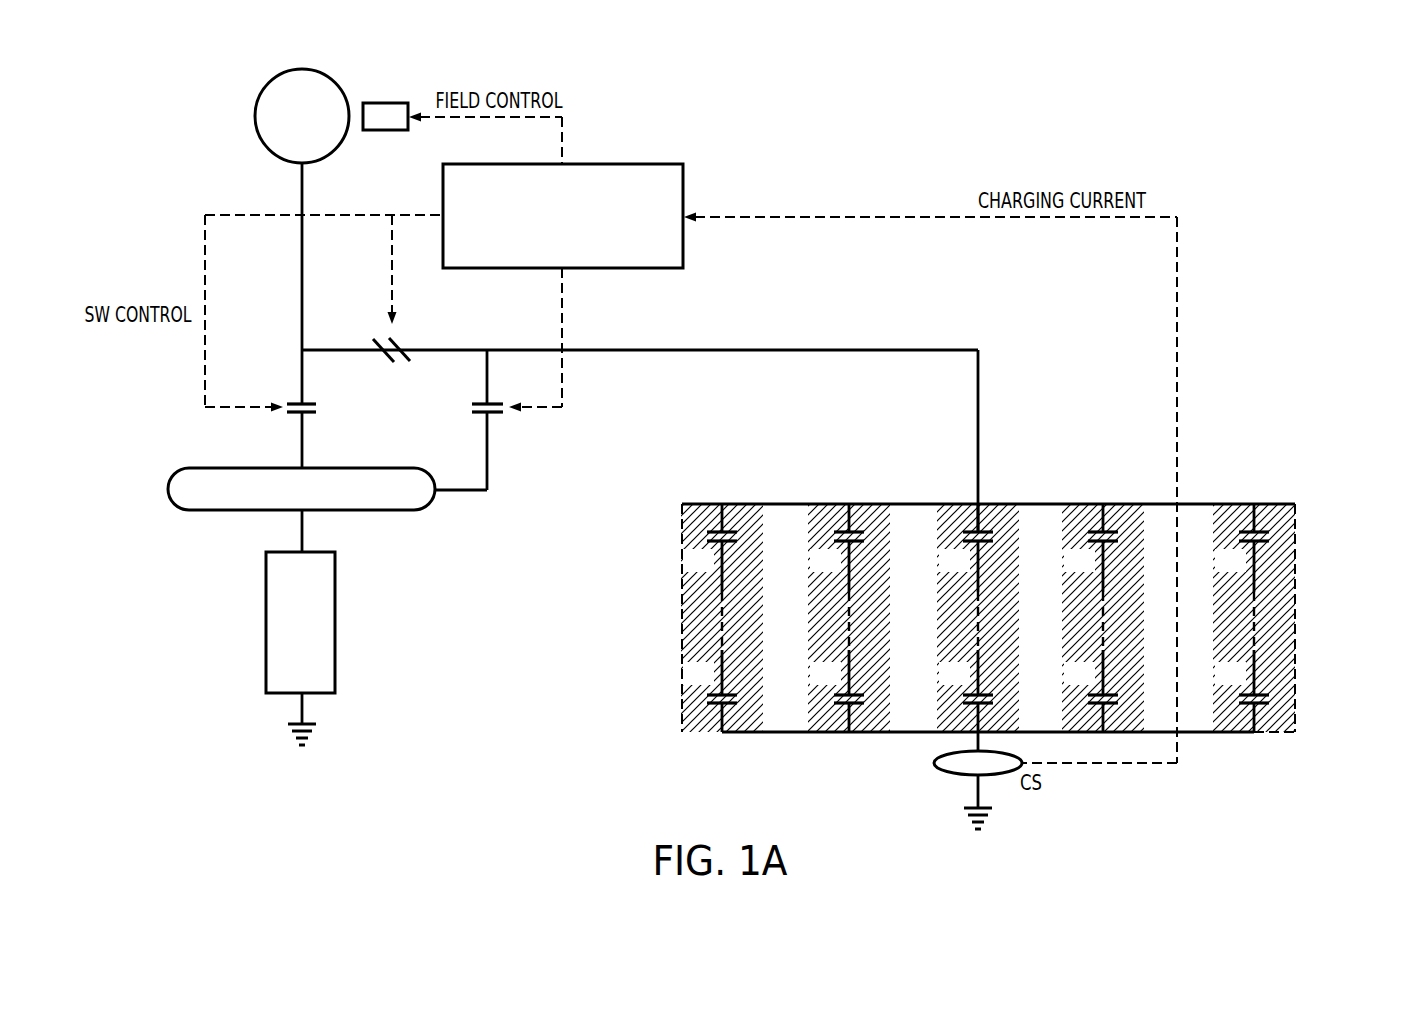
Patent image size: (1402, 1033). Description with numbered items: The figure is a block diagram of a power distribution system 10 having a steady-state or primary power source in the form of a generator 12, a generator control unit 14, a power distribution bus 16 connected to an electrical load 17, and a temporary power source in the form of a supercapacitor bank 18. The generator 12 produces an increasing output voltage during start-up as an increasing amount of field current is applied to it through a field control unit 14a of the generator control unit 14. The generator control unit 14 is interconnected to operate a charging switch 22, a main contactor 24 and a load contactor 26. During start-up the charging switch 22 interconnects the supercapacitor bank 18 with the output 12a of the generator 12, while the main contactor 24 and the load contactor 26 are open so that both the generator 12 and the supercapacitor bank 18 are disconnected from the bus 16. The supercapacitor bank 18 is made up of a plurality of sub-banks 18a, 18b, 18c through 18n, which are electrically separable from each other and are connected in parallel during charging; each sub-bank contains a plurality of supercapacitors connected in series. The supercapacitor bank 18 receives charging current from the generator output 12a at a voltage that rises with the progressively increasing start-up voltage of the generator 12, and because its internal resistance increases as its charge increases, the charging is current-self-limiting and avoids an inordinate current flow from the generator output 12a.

The power distribution system 10 is at (948, 150).
The generator 12 is at (254, 107).
The generator output 12a is at (301, 285).
The generator control unit 14 is at (645, 164).
The field control unit 14a is at (390, 102).
The power distribution bus 16 is at (168, 481).
The electrical load 17 is at (266, 607).
The supercapacitor bank 18 is at (1032, 568).
The sub-bank 18a is at (695, 505).
The sub-bank 18b is at (825, 505).
The sub-bank 18c is at (952, 505).
The sub-bank 18n is at (1278, 505).
The charging switch 22 is at (408, 345).
The main contactor 24 is at (282, 416).
The load contactor 26 is at (495, 422).